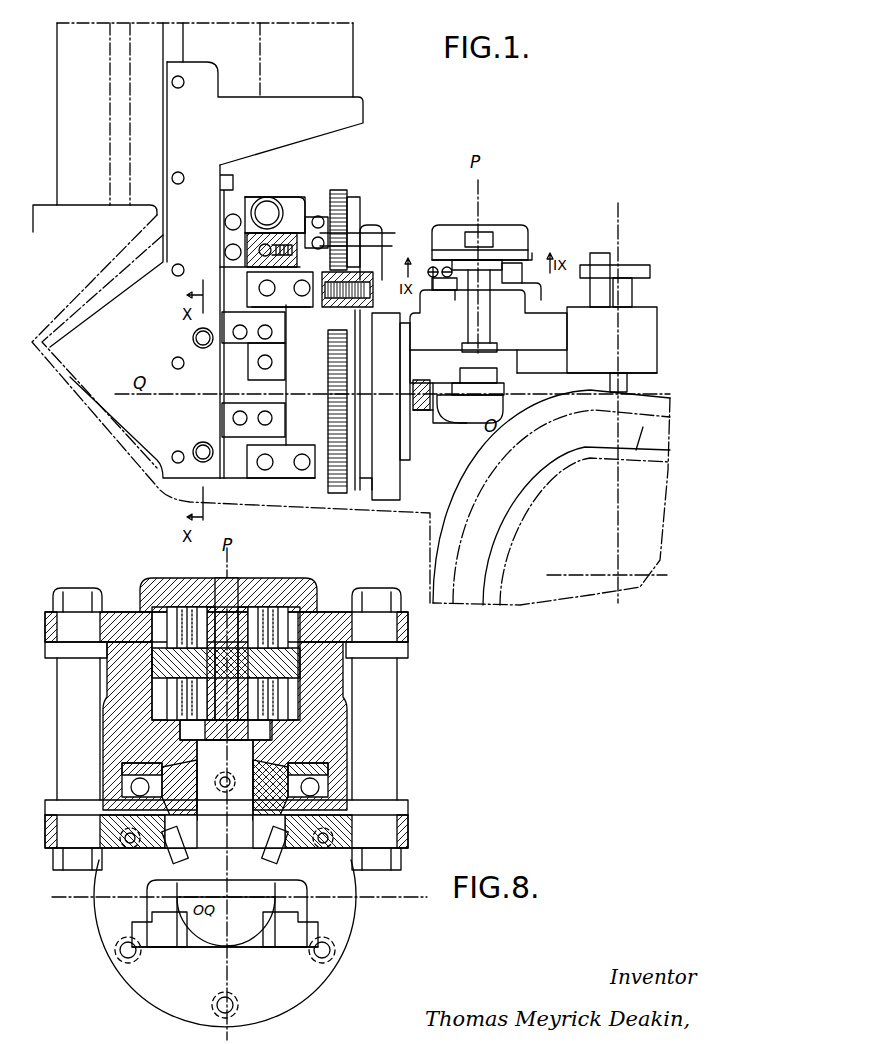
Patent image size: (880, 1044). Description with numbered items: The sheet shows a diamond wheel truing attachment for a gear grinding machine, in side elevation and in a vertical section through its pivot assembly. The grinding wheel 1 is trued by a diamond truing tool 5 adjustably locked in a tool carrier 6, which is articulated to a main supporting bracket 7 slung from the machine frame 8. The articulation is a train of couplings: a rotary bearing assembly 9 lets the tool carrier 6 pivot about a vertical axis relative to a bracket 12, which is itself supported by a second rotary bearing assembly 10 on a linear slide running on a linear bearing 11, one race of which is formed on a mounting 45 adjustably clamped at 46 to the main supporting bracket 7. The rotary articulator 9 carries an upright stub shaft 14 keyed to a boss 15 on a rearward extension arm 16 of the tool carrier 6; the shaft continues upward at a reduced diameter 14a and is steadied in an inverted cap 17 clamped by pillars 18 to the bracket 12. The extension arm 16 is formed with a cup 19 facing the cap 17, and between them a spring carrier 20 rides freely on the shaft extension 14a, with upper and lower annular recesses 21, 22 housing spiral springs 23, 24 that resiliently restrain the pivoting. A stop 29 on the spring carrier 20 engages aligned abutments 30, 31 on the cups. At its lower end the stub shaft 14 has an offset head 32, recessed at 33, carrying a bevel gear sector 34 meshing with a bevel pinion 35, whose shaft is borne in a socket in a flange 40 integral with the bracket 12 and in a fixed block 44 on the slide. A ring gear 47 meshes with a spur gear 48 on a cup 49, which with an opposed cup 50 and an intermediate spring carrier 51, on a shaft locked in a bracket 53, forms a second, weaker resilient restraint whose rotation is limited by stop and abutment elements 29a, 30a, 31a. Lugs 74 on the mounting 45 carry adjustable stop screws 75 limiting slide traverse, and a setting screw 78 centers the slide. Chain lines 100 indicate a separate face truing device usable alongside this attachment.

In FIG. 1, the grinding wheel 1 is at (637, 452).
In FIG. 1, the diamond truing tool 5 is at (628, 384).
In FIG. 1, the tool carrier 6 is at (645, 344).
In FIG. 1, the main supporting bracket 7 is at (173, 128).
In FIG. 1, the machine frame 8 is at (353, 69).
In FIG. 8, the rotary bearing assembly 9 is at (295, 792).
In FIG. 1, the rotary bearing assembly 10 is at (352, 500).
In FIG. 1, the linear bearing 11 is at (275, 450).
In FIG. 1, the bracket 12 is at (502, 358).
In FIG. 8, the bracket 12 is at (140, 853).
In FIG. 8, the stub shaft 14 is at (218, 855).
In FIG. 8, the reduced-diameter shaft extension 14a is at (222, 588).
In FIG. 8, the boss 15 is at (180, 795).
In FIG. 1, the extension arm 16 is at (554, 352).
In FIG. 1, the cap 17 is at (503, 228).
In FIG. 8, the cap 17 is at (147, 588).
In FIG. 1, the pillars 18 is at (491, 300).
In FIG. 8, the pillars 18 is at (63, 698).
In FIG. 8, the cup 19 is at (145, 675).
In FIG. 1, the spring carrier 20 is at (512, 278).
In FIG. 8, the spring carrier 20 is at (283, 670).
In FIG. 8, the upper annular recess 21 is at (252, 612).
In FIG. 8, the lower annular recess 22 is at (232, 740).
In FIG. 8, the spiral spring 23 is at (282, 612).
In FIG. 8, the spiral spring 24 is at (278, 706).
In FIG. 1, the stop 29 is at (442, 290).
In FIG. 1, the stop element 29a is at (367, 232).
In FIG. 1, the abutment 30 is at (445, 268).
In FIG. 1, the abutment element 30a is at (305, 250).
In FIG. 1, the abutment 31 is at (457, 292).
In FIG. 1, the abutment element 31a is at (366, 247).
In FIG. 1, the offset head 32 is at (492, 398).
In FIG. 8, the offset head 32 is at (238, 933).
In FIG. 1, the recess 33 is at (452, 385).
In FIG. 1, the bevel gear sector 34 is at (448, 408).
In FIG. 8, the bevel gear sector 34 is at (303, 942).
In FIG. 1, the bevel pinion 35 is at (426, 412).
In FIG. 8, the flange 40 is at (348, 922).
In FIG. 1, the fixed block 44 is at (268, 375).
In FIG. 1, the mounting 45 is at (220, 277).
In FIG. 1, the clamping arrangement 46 is at (193, 336).
In FIG. 1, the ring gear 47 is at (334, 494).
In FIG. 1, the spur gear 48 is at (340, 190).
In FIG. 1, the cup 49 is at (354, 205).
In FIG. 1, the opposed cup 50 is at (300, 197).
In FIG. 1, the spring carrier 51 is at (312, 215).
In FIG. 1, the bracket 53 is at (368, 232).
In FIG. 1, the lugs 74 is at (287, 233).
In FIG. 1, the adjustable stop screws 75 is at (260, 250).
In FIG. 1, the setting screw 78 is at (264, 200).
In FIG. 1, the face truing device 100 is at (80, 372).